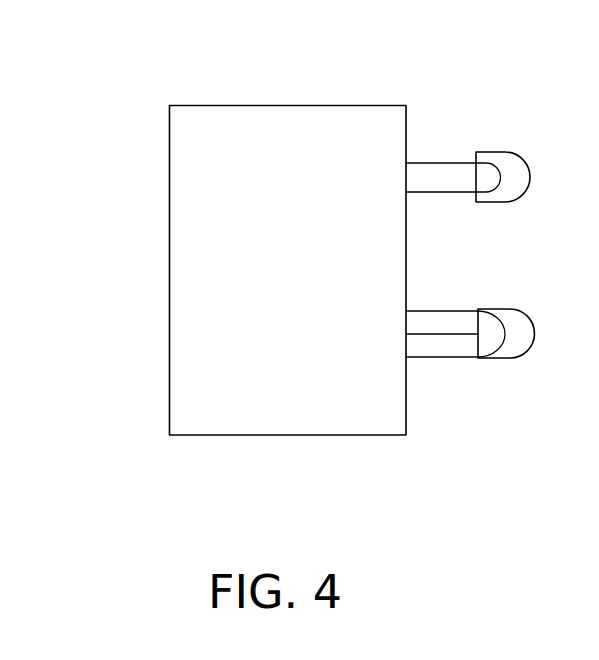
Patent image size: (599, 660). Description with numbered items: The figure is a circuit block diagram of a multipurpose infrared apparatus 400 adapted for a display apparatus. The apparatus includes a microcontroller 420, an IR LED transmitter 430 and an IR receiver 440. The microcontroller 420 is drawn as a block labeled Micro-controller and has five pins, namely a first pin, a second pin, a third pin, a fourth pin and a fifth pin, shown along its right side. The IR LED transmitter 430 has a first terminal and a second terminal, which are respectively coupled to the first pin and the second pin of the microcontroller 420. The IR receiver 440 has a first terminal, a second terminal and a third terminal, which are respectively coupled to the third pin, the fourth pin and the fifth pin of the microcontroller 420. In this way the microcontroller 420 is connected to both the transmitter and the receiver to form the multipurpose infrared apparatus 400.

The multipurpose infrared apparatus 400 is at (425, 487).
The microcontroller 420 is at (213, 140).
The IR LED transmitter 430 is at (535, 158).
The IR receiver 440 is at (508, 360).